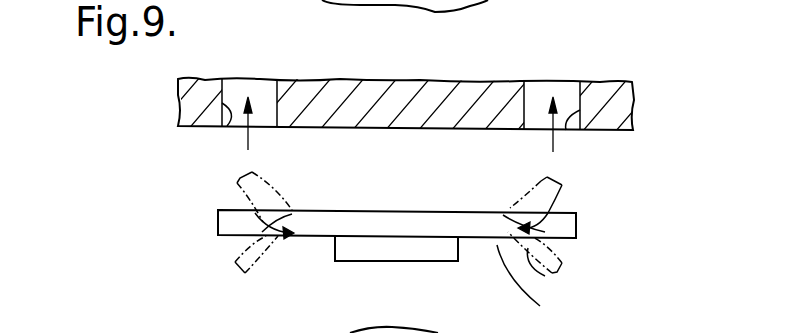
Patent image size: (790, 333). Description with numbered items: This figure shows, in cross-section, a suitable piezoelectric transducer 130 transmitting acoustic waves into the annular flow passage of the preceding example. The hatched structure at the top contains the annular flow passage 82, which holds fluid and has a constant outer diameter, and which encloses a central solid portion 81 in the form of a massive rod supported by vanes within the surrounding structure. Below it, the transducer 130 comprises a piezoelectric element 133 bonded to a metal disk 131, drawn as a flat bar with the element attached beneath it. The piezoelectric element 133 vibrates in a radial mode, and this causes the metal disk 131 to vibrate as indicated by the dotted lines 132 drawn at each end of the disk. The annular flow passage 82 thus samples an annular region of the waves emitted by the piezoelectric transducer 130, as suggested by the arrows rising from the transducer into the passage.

The central solid portion 81 is at (446, 131).
The annular flow passage 82 is at (227, 126).
The piezoelectric transducer 130 is at (534, 289).
The metal disk 131 is at (345, 222).
The dotted lines 132 is at (236, 182).
The piezoelectric element 133 is at (365, 252).